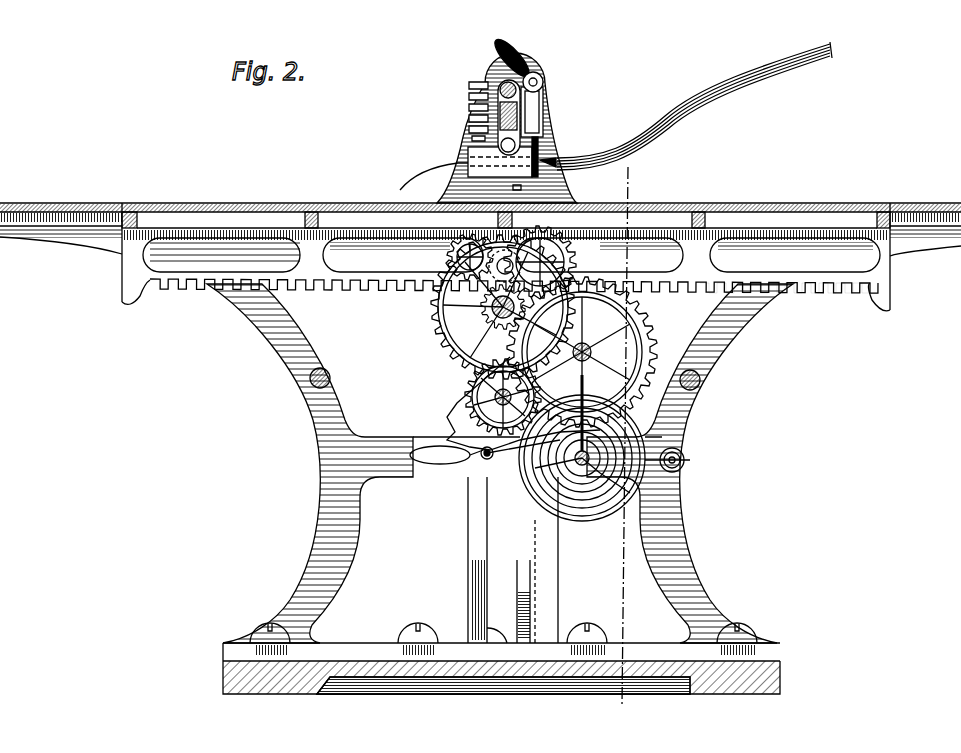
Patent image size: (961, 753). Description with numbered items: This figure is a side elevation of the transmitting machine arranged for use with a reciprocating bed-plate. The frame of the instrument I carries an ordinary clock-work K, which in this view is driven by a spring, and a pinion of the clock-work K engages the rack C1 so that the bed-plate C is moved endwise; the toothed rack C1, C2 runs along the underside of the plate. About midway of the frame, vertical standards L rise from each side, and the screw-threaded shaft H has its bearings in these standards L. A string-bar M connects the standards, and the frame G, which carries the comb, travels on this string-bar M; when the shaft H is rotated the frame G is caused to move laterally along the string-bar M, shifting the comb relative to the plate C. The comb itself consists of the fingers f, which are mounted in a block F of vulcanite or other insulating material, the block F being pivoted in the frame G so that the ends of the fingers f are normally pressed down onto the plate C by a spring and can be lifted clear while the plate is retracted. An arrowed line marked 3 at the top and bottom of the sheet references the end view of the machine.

The bed-plate C is at (268, 208).
The rack C1 is at (398, 286).
The rack end C2 is at (856, 288).
The frame of the instrument I is at (331, 513).
The clock-work K is at (463, 386).
The block F is at (507, 128).
The string-bar M is at (521, 108).
The frame G is at (536, 112).
The screw-threaded shaft H is at (490, 72).
The vertical standards L is at (548, 140).
The fingers f is at (434, 174).
The section line 3- 3 is at (639, 710).